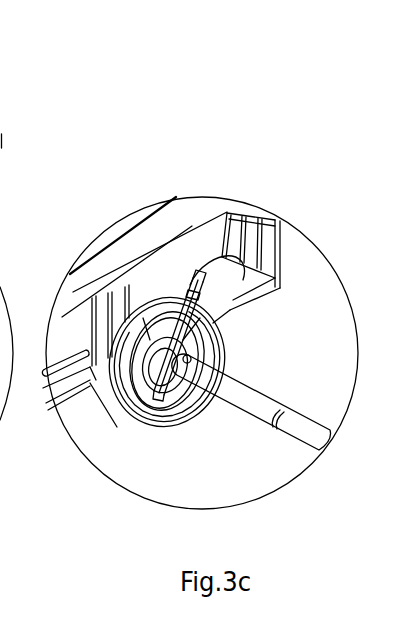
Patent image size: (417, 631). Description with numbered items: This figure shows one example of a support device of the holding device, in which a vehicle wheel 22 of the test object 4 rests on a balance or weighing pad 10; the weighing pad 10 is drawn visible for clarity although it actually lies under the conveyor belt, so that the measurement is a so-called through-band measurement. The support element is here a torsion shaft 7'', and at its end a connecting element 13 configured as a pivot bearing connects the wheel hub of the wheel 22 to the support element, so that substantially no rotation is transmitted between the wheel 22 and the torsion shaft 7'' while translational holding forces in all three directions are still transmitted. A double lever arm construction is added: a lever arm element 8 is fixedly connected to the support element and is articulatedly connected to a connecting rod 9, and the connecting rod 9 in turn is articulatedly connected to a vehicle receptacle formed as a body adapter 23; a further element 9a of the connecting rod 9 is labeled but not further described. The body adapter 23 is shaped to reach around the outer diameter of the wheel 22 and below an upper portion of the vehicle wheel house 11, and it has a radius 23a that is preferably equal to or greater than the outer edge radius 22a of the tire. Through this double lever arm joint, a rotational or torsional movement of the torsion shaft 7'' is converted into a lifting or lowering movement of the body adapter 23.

The test object 4 is at (208, 217).
The torsion shaft 7'' is at (251, 391).
The lever arm element 8 is at (187, 358).
The connecting rod 9 is at (177, 348).
The lever ring 9a is at (163, 397).
The weighing pad 10 is at (158, 430).
The vehicle wheel house 11 is at (217, 267).
The connecting element 13 is at (163, 353).
The vehicle wheel 22 is at (160, 290).
The outer edge radius 22a is at (133, 335).
The body adapter 23 is at (186, 265).
The radius 23a is at (195, 287).